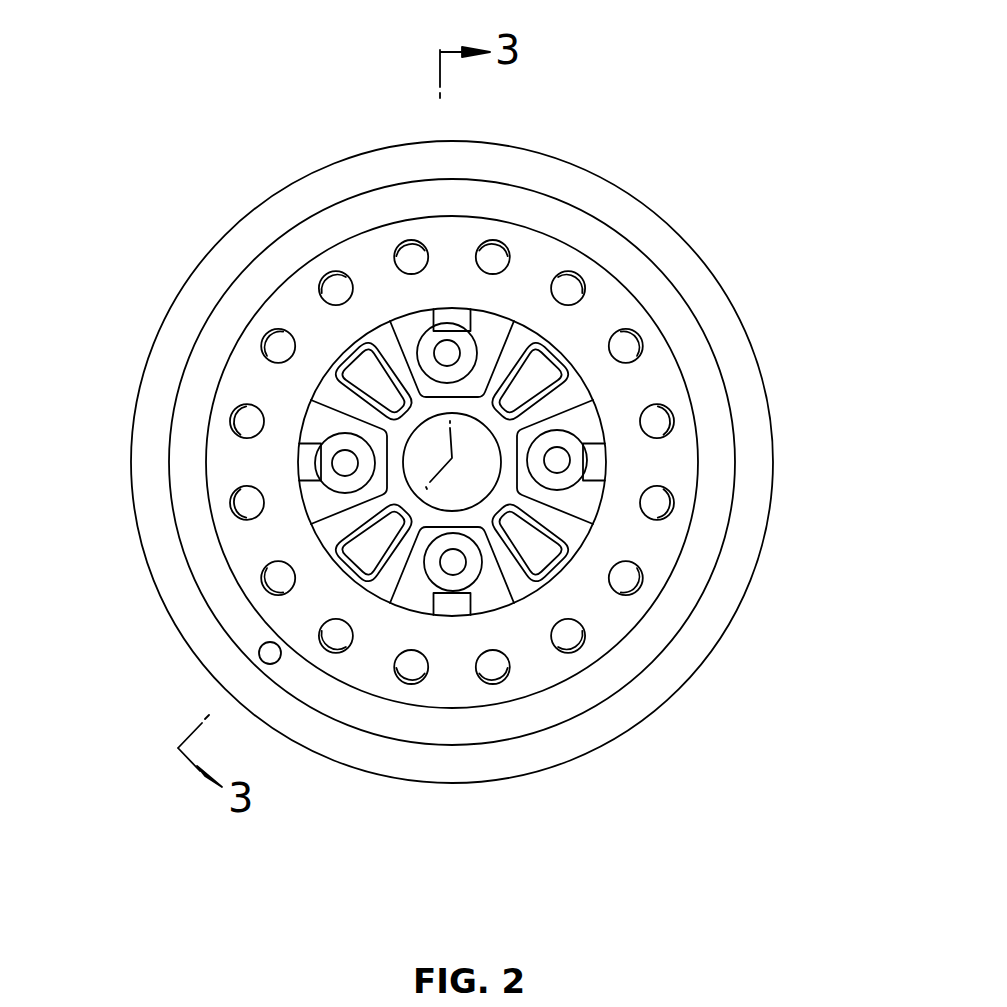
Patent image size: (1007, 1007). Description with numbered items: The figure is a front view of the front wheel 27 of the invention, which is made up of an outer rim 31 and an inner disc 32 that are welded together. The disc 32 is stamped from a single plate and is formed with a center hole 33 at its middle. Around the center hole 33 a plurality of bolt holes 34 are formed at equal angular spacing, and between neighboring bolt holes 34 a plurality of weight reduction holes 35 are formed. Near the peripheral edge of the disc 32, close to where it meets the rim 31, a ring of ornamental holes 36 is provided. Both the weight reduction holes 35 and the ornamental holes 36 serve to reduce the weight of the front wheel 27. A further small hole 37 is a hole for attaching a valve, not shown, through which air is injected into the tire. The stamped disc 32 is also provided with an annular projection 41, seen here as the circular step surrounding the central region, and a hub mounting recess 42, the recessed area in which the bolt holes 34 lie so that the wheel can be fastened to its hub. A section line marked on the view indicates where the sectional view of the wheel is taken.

The front wheel 27 is at (199, 141).
The rim 31 is at (326, 135).
The disc 32 is at (562, 238).
The center hole 33 is at (482, 434).
The bolt holes 34 is at (446, 350).
The weight reduction holes 35 is at (353, 400).
The ornamental holes 36 is at (268, 341).
The valve attaching hole 37 is at (264, 653).
The annular projection 41 is at (552, 660).
The hub mounting recess 42 is at (497, 328).